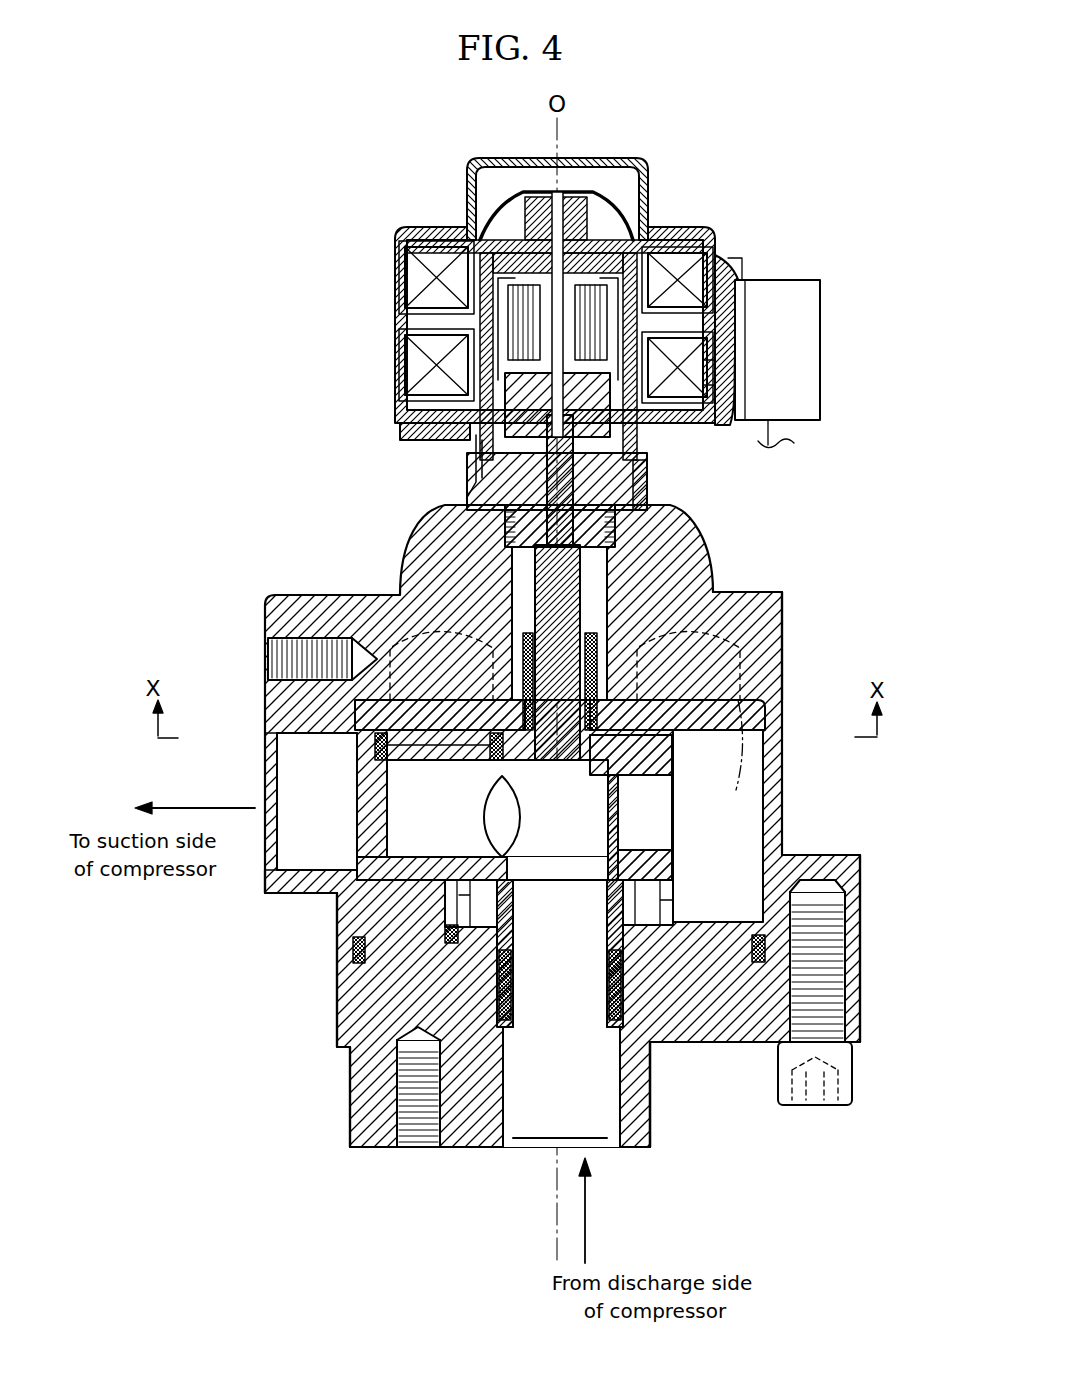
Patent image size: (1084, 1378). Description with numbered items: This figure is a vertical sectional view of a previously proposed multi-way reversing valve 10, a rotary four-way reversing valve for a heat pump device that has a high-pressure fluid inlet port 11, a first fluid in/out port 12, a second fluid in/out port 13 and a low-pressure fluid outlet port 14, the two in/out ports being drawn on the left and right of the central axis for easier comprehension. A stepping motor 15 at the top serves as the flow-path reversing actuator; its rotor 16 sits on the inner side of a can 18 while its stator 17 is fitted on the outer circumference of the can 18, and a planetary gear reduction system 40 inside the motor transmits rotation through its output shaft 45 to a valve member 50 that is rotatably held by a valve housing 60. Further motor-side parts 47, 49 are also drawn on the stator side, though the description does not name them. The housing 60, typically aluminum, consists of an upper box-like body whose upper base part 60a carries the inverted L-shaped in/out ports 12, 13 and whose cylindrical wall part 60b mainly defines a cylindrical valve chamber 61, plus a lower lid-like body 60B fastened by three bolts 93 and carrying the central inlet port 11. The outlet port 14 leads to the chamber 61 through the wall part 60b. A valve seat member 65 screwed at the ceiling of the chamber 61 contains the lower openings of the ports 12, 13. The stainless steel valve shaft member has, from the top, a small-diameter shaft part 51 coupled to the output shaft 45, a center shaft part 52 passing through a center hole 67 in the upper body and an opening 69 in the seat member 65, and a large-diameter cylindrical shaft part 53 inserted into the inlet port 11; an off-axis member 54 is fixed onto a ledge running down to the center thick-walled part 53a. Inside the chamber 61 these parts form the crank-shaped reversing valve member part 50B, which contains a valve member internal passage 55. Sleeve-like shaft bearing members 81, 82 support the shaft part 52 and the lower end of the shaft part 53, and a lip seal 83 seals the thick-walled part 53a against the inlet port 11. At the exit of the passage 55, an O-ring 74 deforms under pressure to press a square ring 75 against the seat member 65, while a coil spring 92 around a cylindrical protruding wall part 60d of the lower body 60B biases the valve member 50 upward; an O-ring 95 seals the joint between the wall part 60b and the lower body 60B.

The multi-way reversing valve 10 is at (240, 256).
The high-pressure fluid inlet port 11 is at (522, 1112).
The first fluid in/out port 12 is at (497, 821).
The second fluid in/out port 13 is at (718, 826).
The low-pressure fluid outlet port 14 is at (278, 860).
The stepping motor 15 is at (680, 206).
The rotor 16 is at (466, 222).
The stator 17 is at (726, 257).
The can 18 is at (598, 202).
The planetary gear reduction system 40 is at (518, 290).
The output shaft 45 is at (455, 332).
The stopper 47 is at (647, 486).
The terminal 49 is at (712, 370).
The valve member 50 is at (525, 607).
The reversing valve member part 50B is at (355, 841).
The small-diameter shaft part 51 is at (472, 458).
The center shaft part 52 is at (590, 606).
The large-diameter cylindrical shaft part 53 is at (672, 856).
The center thick-walled part 53a is at (612, 907).
The off-axis member 54 is at (357, 778).
The valve member internal passage 55 is at (575, 1003).
The valve housing 60 is at (296, 590).
The upper base part 60a is at (776, 620).
The cylindrical wall part 60b is at (782, 848).
The cylindrical protruding wall part 60d is at (452, 936).
The lower lid-like body 60B is at (358, 1022).
The valve chamber 61 is at (748, 770).
The valve seat member 65 is at (770, 712).
The center hole 67 is at (498, 648).
The opening 69 is at (504, 692).
The O-ring 74 is at (372, 752).
The square ring 75 is at (376, 735).
The shaft bearing member 81 is at (512, 612).
The shaft bearing member 82 is at (498, 985).
The lip seal 83 is at (470, 935).
The coil spring 92 is at (472, 893).
The bolts 93 is at (846, 1060).
The O-ring 95 is at (752, 945).